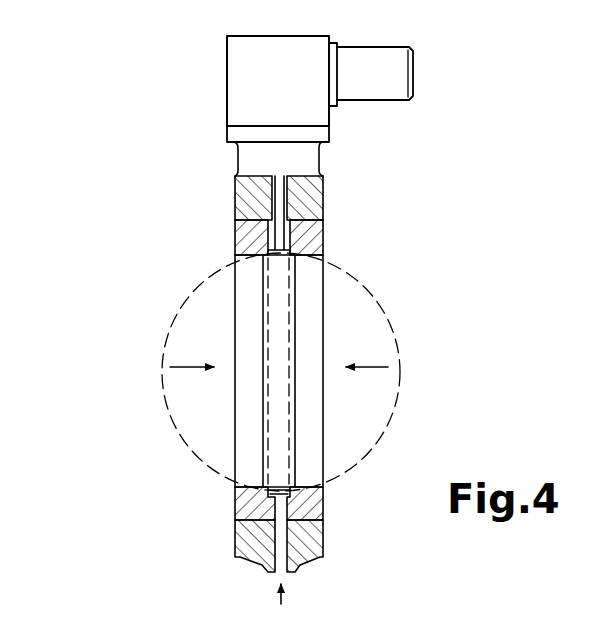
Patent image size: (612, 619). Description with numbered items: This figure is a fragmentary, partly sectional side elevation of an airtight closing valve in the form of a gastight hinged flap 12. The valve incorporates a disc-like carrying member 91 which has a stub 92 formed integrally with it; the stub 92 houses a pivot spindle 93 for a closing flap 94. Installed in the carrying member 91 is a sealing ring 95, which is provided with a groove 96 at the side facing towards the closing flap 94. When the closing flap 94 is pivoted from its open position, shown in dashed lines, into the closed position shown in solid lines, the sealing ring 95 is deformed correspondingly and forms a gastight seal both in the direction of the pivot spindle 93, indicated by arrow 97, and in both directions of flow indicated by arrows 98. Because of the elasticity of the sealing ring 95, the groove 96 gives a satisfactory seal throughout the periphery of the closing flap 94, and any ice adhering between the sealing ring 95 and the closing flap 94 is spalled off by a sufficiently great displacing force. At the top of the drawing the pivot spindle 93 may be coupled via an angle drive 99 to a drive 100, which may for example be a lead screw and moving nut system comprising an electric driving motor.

The gastight hinged flap 12 is at (104, 253).
The disc-like carrying member 91 is at (315, 537).
The stub 92 is at (300, 157).
The pivot spindle 93 is at (305, 190).
The closing flap 94 is at (298, 321).
The sealing ring 95 is at (317, 508).
The groove 96 is at (268, 497).
The arrow 97 is at (296, 586).
The arrows 98 is at (186, 370).
The angle drive 99 is at (252, 70).
The drive 100 is at (378, 81).